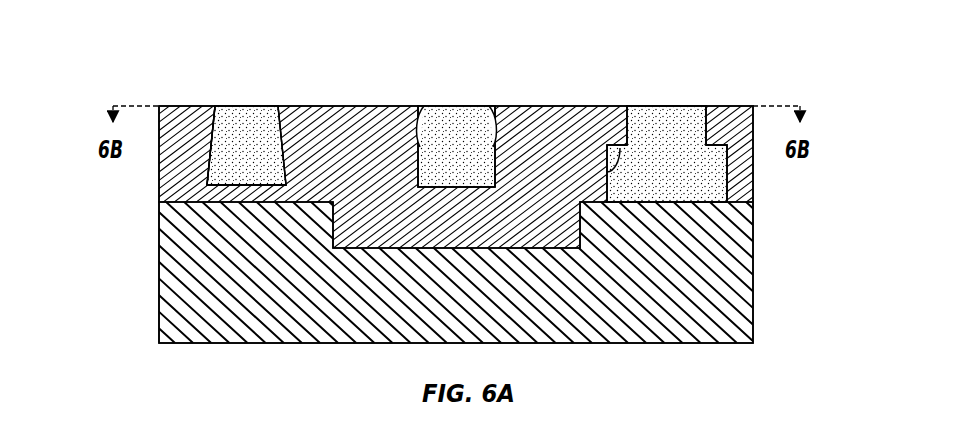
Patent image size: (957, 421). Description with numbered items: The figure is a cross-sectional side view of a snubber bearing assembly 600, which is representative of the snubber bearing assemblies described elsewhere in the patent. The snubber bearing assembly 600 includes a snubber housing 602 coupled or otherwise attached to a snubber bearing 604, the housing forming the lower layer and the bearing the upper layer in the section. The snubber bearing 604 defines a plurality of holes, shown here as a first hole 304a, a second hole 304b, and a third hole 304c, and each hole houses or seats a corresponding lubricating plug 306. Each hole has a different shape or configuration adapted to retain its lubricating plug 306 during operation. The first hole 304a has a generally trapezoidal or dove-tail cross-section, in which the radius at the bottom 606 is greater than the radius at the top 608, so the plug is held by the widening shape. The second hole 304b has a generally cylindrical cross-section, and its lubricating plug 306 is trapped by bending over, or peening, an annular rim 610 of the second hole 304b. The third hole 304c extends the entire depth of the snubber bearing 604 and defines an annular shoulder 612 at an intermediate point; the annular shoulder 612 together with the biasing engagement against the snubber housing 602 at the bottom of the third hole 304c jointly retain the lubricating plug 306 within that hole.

The snubber bearing assembly 600 is at (116, 53).
The snubber housing 602 is at (747, 287).
The snubber bearing 604 is at (750, 182).
The lubricating plug 306 is at (266, 162).
The first hole 304a is at (257, 81).
The second hole 304b is at (473, 81).
The third hole 304c is at (690, 81).
The top of the first hole 608 is at (232, 106).
The bottom of the first hole 606 is at (246, 186).
The annular rim 610 is at (417, 131).
The annular shoulder 612 is at (607, 173).